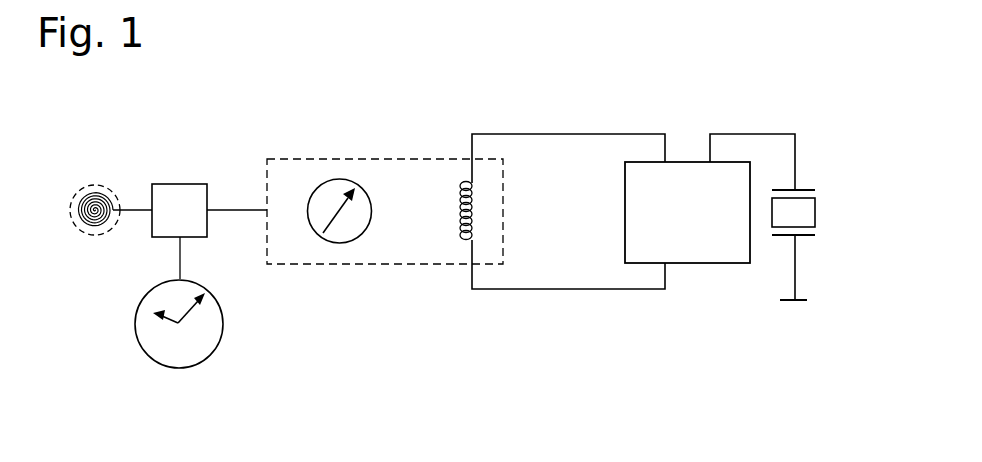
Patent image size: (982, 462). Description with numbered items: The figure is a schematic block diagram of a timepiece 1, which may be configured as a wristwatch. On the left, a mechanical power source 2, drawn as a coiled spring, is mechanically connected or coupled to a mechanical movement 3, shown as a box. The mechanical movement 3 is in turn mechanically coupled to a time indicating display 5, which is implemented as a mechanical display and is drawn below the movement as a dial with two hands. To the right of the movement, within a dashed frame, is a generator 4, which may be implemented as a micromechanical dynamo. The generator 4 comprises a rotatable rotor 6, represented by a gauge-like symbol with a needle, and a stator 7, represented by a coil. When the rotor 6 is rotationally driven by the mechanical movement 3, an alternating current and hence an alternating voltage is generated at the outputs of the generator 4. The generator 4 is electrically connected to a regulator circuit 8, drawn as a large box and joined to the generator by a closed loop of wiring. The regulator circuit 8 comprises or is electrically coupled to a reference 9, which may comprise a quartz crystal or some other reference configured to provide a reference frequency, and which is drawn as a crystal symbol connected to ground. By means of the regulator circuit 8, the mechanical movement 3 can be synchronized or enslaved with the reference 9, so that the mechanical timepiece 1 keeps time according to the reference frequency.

The timepiece 1 is at (196, 137).
The mechanical power source 2 is at (78, 203).
The mechanical movement 3 is at (192, 183).
The generator 4 is at (337, 159).
The time indicating display 5 is at (224, 325).
The rotor 6 is at (343, 244).
The stator 7 is at (461, 222).
The regulator circuit 8 is at (685, 162).
The reference 9 is at (845, 202).